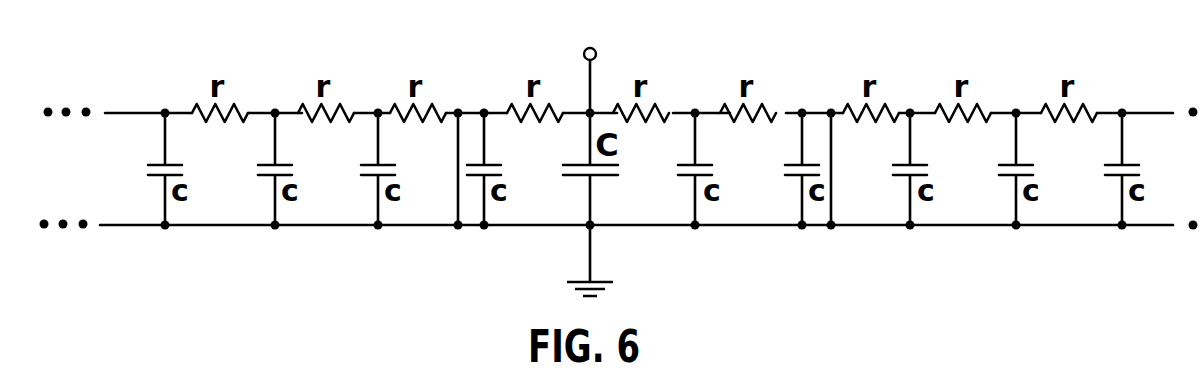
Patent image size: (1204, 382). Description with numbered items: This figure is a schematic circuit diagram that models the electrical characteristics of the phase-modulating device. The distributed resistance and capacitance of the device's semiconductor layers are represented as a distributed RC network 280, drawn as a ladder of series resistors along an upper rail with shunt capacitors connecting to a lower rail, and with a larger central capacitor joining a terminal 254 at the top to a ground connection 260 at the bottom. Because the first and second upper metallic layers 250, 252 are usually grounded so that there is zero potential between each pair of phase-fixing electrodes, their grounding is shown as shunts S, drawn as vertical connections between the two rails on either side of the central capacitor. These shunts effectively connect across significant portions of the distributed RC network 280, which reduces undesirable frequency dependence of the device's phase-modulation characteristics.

The first upper metallic layer 250 is at (458, 110).
The second upper metallic layer 252 is at (831, 110).
The input terminal 254 is at (593, 78).
The ground 260 is at (592, 248).
The distributed RC network 280 is at (560, 58).